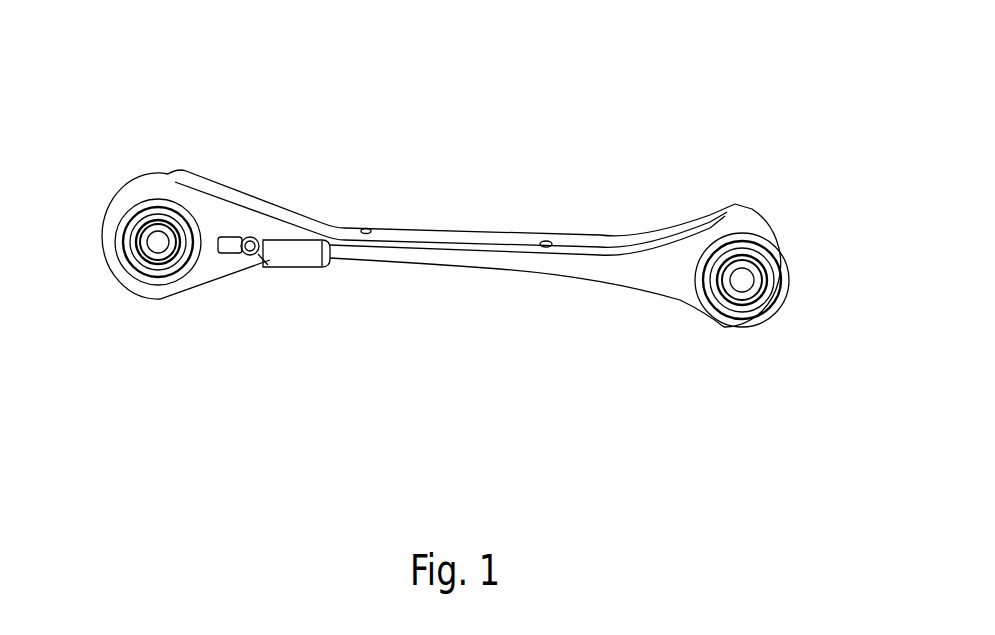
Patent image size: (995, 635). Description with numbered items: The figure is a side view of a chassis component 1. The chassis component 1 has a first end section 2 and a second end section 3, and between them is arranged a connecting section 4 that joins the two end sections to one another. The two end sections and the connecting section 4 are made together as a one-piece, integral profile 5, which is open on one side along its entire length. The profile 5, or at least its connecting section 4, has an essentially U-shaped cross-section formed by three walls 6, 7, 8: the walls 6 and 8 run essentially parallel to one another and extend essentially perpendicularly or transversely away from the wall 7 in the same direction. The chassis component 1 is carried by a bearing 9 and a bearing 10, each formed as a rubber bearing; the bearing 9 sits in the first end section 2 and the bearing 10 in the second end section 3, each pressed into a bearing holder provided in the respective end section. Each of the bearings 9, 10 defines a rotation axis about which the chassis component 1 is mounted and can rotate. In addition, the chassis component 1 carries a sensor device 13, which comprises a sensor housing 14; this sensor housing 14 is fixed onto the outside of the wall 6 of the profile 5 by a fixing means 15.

The chassis component 1 is at (595, 100).
The first end section 2 is at (193, 133).
The second end section 3 is at (752, 160).
The connecting section 4 is at (441, 217).
The profile 5 is at (518, 318).
The wall 6 is at (468, 260).
The wall 7 is at (490, 232).
The wall 8 is at (533, 226).
The bearing 9 is at (147, 281).
The bearing 10 is at (728, 318).
The sensor device 13 is at (252, 178).
The sensor housing 14 is at (273, 242).
The fixing means 15 is at (250, 257).